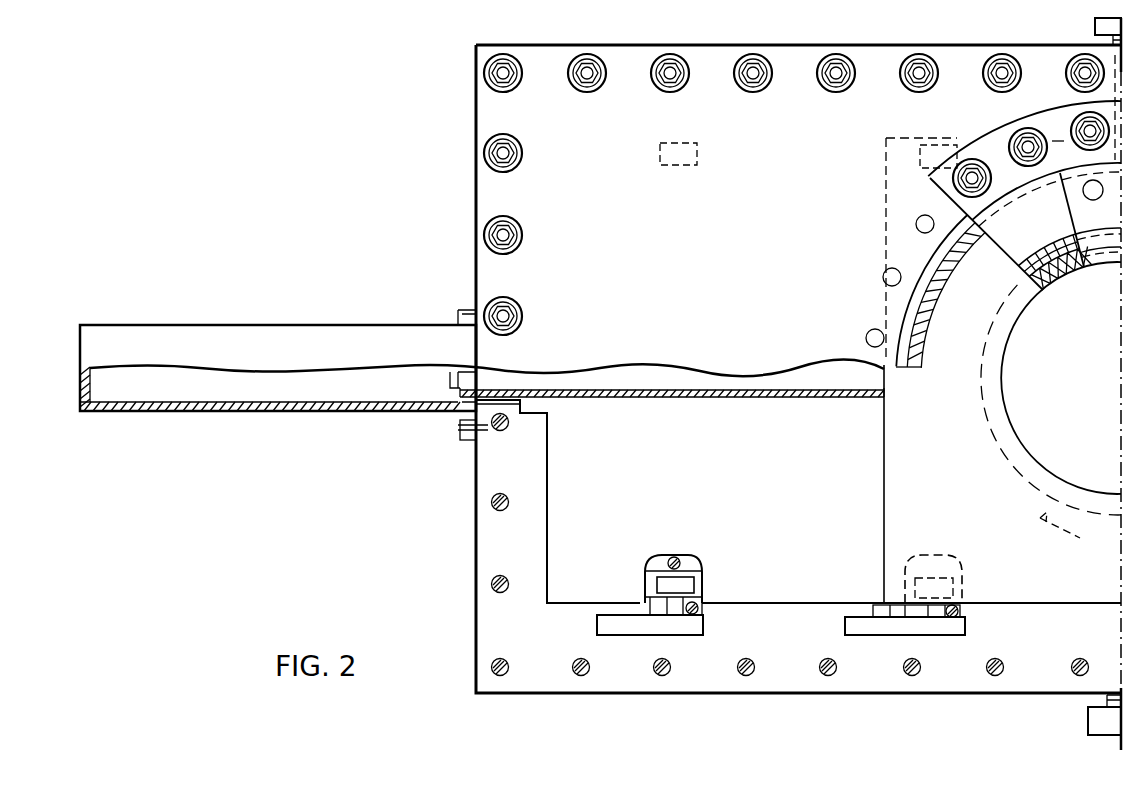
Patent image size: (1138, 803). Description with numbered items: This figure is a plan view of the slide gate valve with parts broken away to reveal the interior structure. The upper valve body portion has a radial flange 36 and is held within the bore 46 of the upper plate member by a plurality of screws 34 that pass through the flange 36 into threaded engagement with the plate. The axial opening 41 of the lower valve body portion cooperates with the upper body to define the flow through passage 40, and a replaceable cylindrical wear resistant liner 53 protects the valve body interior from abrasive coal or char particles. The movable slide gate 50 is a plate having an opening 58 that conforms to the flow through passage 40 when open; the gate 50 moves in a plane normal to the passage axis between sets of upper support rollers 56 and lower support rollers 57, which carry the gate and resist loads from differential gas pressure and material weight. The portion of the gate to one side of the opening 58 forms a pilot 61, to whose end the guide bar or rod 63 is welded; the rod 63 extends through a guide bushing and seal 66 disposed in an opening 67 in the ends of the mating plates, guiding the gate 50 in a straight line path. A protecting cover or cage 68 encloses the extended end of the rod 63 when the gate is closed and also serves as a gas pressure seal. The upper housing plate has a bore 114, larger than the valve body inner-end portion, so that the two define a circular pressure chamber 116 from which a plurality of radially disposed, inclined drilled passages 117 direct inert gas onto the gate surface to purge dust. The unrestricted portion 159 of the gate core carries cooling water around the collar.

The screws 34 is at (1086, 124).
The radial flange 36 is at (1018, 128).
The flow through passage 40 is at (1090, 383).
The axial opening 41 is at (1066, 278).
The bore 46 is at (938, 270).
The slide gate 50 is at (901, 507).
The wear resistant liner 53 is at (1040, 310).
The upper support rollers 56 is at (677, 165).
The lower support rollers 57 is at (678, 588).
The opening 58 is at (1030, 440).
The pilot 61 is at (900, 422).
The guide bar or rod 63 is at (603, 378).
The guide bushing and seal 66 is at (508, 400).
The opening 67 is at (497, 388).
The protecting cover or cage 68 is at (262, 336).
The bore 114 is at (913, 273).
The pressure chamber 116 is at (905, 300).
The drilled passages 117 is at (916, 326).
The unrestricted portion 159 is at (915, 452).